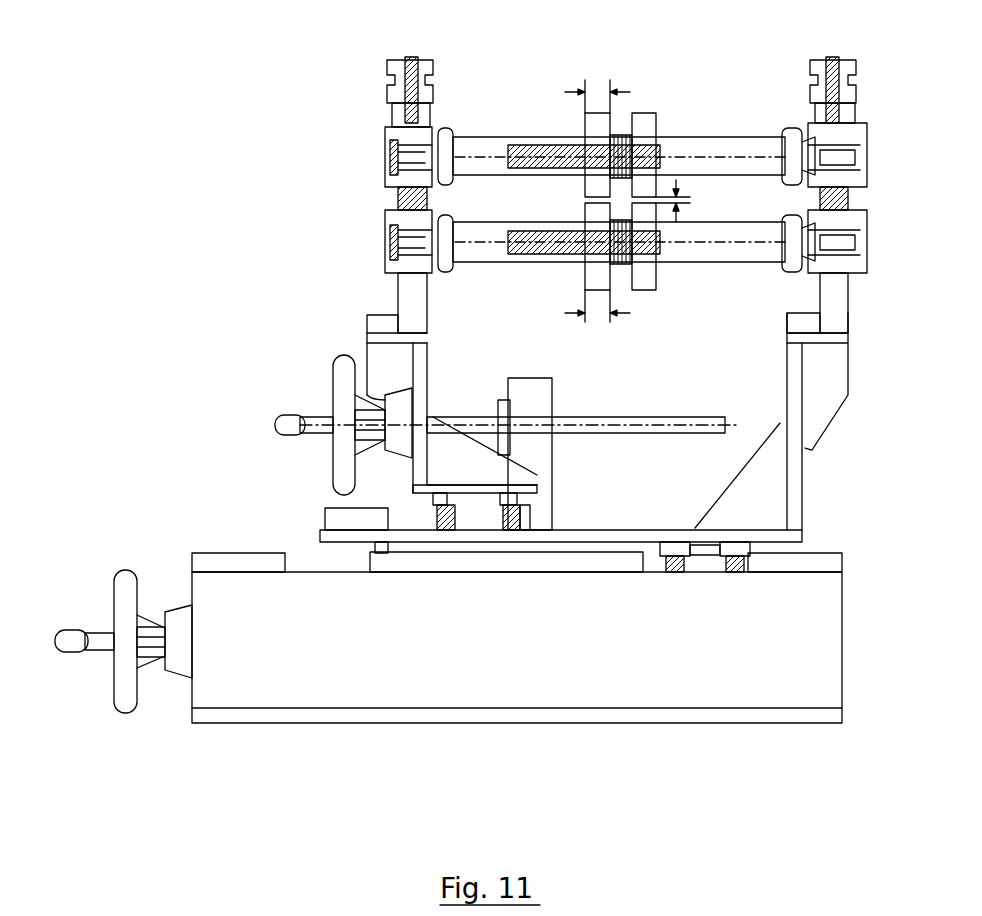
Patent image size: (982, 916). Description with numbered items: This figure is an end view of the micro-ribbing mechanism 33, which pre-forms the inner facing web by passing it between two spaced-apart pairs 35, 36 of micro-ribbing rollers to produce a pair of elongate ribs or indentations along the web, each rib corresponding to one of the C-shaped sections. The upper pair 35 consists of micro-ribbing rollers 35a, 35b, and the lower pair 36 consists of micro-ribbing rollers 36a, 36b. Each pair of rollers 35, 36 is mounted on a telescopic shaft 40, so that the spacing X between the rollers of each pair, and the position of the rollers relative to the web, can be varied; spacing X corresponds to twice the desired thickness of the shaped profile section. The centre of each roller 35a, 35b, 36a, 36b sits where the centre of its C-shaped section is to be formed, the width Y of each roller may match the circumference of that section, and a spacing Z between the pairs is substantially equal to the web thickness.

The micro-ribbing mechanism 33 is at (272, 152).
The pair of micro-ribbing rollers 35 is at (648, 58).
The micro-ribbing roller 35a is at (590, 122).
The micro-ribbing roller 35b is at (641, 120).
The pair of micro-ribbing rollers 36 is at (657, 302).
The micro-ribbing roller 36a is at (590, 275).
The micro-ribbing roller 36b is at (645, 276).
The telescopic shaft 40 is at (742, 140).